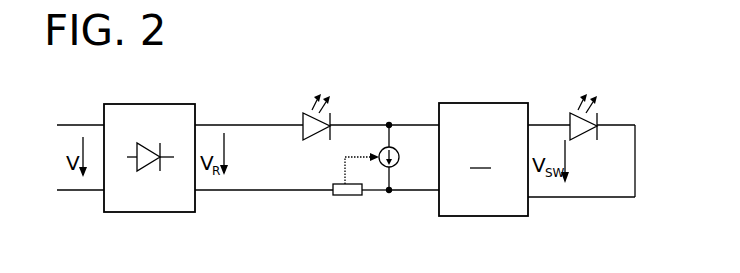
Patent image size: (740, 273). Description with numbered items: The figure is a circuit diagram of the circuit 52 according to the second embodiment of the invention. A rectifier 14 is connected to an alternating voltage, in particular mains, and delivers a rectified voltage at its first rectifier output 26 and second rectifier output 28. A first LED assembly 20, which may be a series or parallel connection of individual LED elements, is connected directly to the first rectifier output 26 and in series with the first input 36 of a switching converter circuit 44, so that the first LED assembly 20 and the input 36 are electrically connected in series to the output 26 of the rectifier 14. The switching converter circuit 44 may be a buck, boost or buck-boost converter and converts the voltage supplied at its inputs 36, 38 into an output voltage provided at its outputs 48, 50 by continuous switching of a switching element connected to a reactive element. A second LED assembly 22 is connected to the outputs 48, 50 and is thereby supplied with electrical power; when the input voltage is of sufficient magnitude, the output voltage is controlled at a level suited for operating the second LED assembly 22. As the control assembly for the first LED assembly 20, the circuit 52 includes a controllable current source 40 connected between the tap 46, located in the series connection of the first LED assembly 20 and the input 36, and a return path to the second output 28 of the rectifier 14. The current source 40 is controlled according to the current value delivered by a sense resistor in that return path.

The rectifier 14 is at (141, 104).
The first rectifier output 26 is at (198, 125).
The second rectifier output 28 is at (199, 190).
The first LED assembly 20 is at (303, 113).
The tap 46 is at (388, 123).
The controllable current source 40 is at (400, 152).
The first input of switching converter circuit 36 is at (417, 125).
The second input of switching converter circuit 38 is at (424, 190).
The switching converter circuit 44 is at (483, 159).
The circuit 52 is at (466, 78).
The first output of switching converter circuit 48 is at (538, 125).
The second LED assembly 22 is at (582, 136).
The second output of switching converter circuit 50 is at (540, 197).